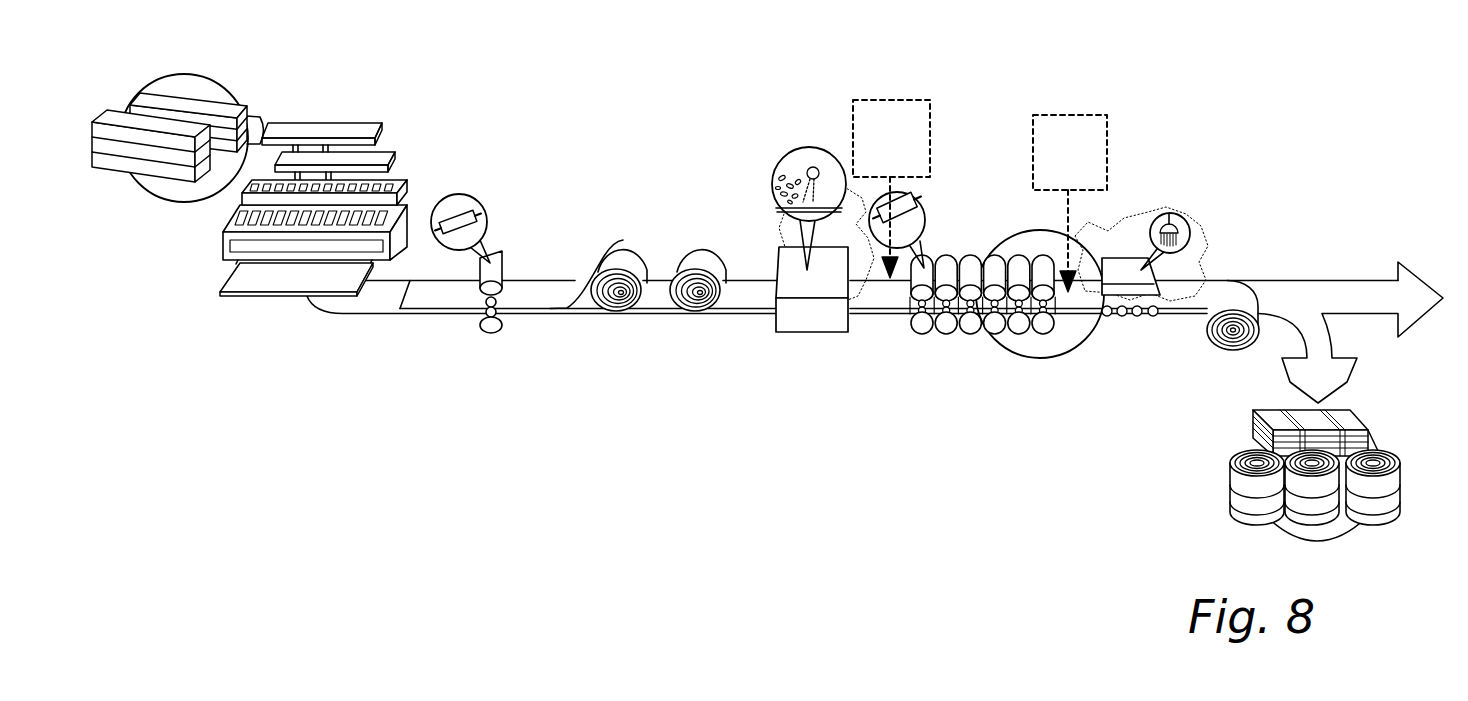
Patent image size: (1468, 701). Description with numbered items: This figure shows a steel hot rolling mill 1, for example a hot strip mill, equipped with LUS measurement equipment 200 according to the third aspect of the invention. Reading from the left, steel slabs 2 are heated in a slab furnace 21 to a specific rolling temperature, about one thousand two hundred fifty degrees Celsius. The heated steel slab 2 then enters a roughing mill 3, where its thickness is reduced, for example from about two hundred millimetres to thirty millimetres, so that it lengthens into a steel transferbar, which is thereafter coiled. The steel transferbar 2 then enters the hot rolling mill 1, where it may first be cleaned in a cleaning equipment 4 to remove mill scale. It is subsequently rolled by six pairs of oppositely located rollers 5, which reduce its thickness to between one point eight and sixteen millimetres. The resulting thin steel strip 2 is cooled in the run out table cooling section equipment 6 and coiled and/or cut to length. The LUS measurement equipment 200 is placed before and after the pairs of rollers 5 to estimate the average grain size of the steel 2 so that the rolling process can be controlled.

The steel hot rolling mill 1 is at (1172, 98).
The steel slab 2 is at (340, 130).
The slab furnace 21 is at (407, 202).
The roughing mill 3 is at (493, 262).
The cleaning equipment 4 is at (813, 320).
The pairs of oppositely located rollers 5 is at (973, 325).
The cooling section ROT equipment 6 is at (1125, 290).
The LUS measurement equipment 200 is at (897, 100).